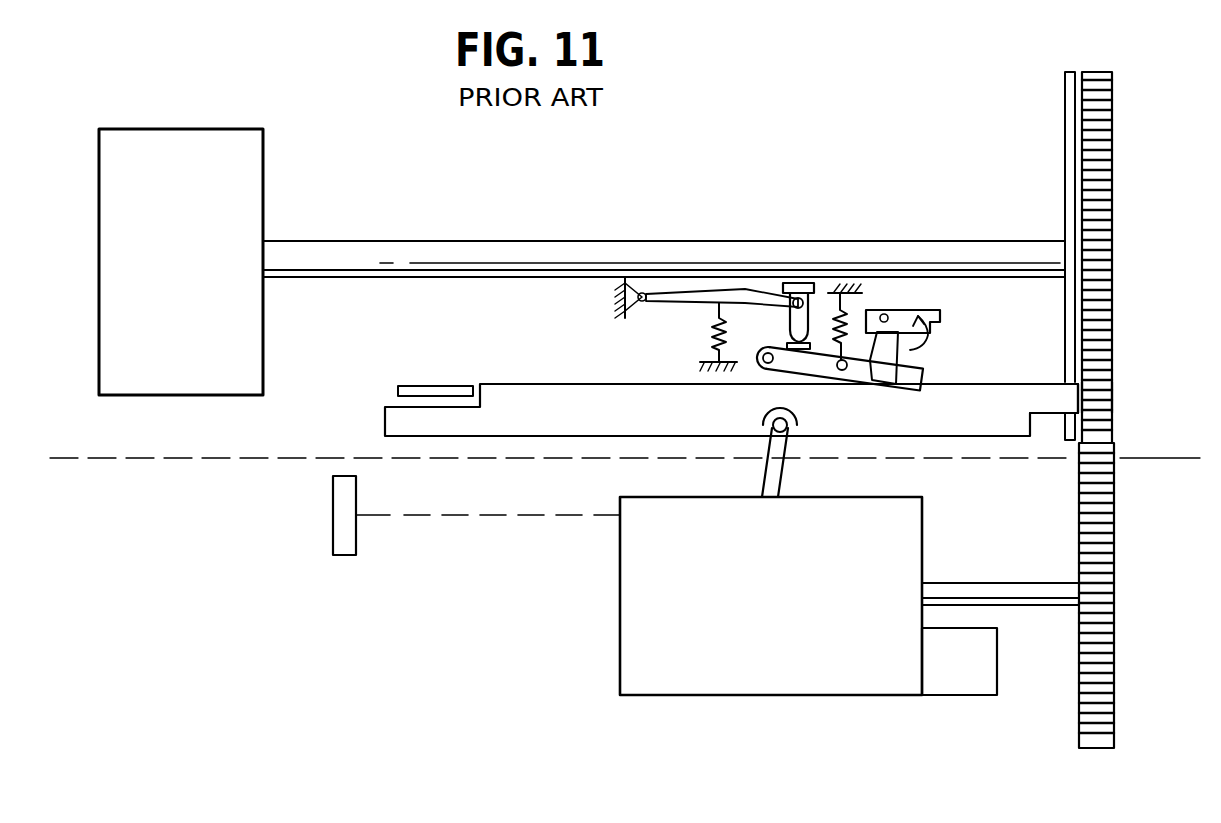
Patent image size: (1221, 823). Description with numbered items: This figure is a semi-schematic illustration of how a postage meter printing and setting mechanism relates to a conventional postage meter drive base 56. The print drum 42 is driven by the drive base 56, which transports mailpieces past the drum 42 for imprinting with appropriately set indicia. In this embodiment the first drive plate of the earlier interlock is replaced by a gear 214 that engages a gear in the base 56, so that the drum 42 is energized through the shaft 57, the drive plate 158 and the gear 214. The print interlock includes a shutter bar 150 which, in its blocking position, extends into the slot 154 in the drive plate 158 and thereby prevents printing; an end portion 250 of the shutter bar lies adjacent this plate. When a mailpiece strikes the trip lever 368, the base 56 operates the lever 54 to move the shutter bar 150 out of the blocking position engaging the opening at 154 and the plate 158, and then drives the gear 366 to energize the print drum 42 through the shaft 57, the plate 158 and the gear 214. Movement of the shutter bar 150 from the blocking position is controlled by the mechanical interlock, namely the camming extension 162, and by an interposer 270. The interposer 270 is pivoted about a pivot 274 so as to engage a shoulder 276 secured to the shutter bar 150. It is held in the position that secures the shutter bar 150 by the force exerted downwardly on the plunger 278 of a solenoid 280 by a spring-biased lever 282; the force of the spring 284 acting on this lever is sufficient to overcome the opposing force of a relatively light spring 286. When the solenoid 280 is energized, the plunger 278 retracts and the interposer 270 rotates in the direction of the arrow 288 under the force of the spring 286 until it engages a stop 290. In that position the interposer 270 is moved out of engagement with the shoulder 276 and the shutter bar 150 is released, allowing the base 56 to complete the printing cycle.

The print drum 42 is at (238, 397).
The shaft 57 is at (463, 240).
The drive plate 158 is at (1065, 155).
The gear 214 is at (1112, 192).
The slot 154 is at (1082, 398).
The gear 366 is at (1114, 565).
The shutter bar 150 is at (580, 420).
The plate end portion 250 is at (1060, 378).
The camming extension 162 is at (448, 398).
The lever 54 is at (782, 476).
The postage meter drive base 56 is at (620, 588).
The trip lever 368 is at (330, 541).
The springbiased lever 282 is at (665, 308).
The spring 284 is at (703, 343).
The solenoid 280 is at (776, 285).
The plunger 278 is at (815, 320).
The spring 286 is at (852, 297).
The stop 290 is at (888, 312).
The arrow 288 is at (930, 340).
The interposer 270 is at (880, 378).
The pivot 274 is at (762, 370).
The shoulder 276 is at (914, 390).